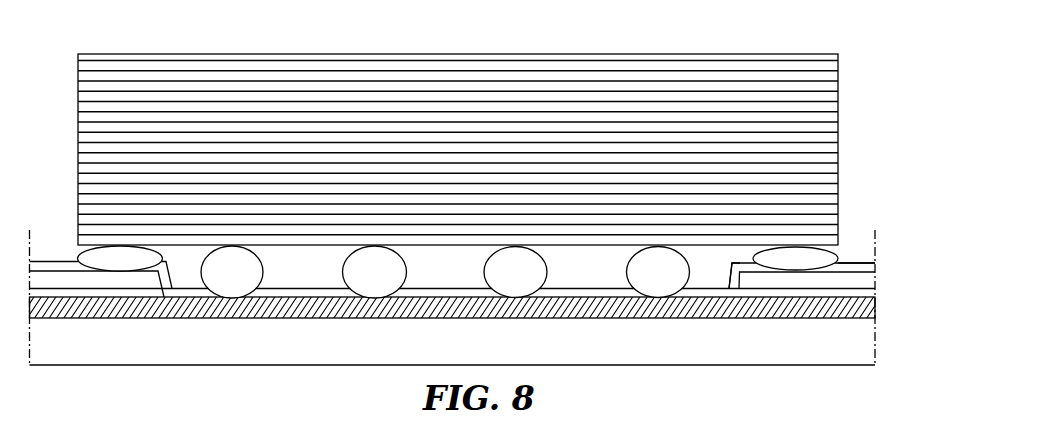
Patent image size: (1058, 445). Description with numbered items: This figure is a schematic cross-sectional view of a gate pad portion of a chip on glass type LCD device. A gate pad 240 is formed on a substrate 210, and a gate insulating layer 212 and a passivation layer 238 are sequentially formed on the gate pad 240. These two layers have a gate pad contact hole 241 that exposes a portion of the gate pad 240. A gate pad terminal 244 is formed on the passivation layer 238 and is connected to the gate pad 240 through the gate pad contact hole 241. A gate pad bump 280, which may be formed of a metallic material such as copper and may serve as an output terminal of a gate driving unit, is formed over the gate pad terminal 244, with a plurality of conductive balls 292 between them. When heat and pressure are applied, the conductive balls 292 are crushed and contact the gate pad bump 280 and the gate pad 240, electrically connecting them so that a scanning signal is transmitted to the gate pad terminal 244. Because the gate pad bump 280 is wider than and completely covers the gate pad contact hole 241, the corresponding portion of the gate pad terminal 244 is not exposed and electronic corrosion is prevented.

The substrate 210 is at (433, 350).
The gate insulating layer 212 is at (877, 293).
The passivation layer 238 is at (877, 278).
The gate pad 240 is at (753, 297).
The gate pad terminal 244 is at (863, 268).
The conductive balls 292 is at (657, 258).
The gate pad bump 280 is at (838, 187).
The gate pad contact hole 241 is at (308, 263).